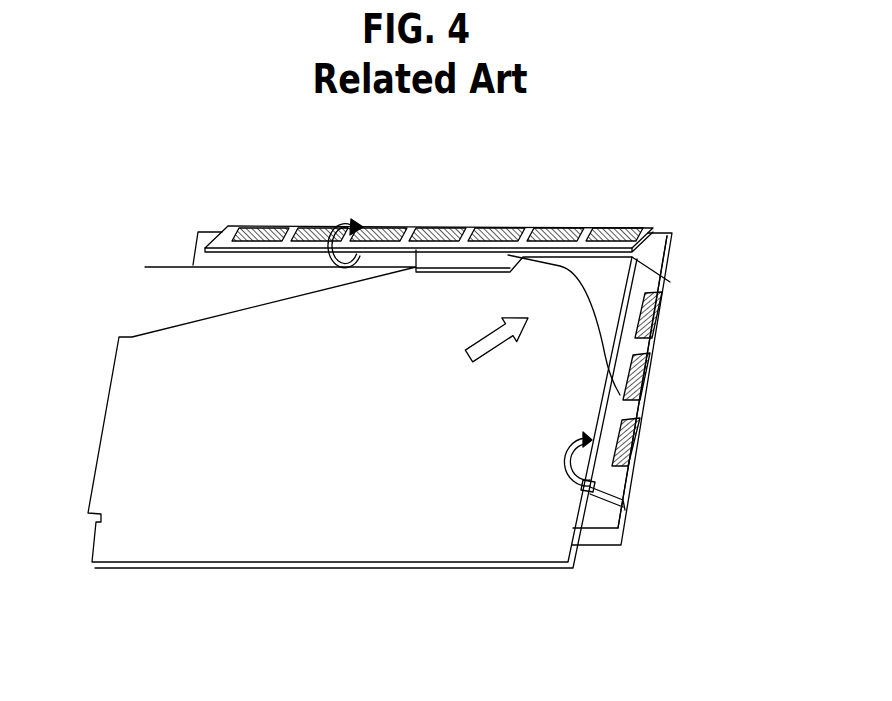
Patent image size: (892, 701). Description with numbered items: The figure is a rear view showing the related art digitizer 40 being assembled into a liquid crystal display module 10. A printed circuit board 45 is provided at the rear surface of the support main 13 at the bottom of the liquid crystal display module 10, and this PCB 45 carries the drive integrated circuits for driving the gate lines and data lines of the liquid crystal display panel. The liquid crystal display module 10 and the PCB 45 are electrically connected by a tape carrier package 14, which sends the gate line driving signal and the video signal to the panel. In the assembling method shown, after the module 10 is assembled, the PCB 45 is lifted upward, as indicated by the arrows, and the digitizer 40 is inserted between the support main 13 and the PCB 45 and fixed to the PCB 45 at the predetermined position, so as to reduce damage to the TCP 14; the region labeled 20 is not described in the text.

The liquid crystal display module 10 is at (530, 228).
The support main 13 is at (663, 246).
The tape carrier package 14 is at (620, 226).
The side mounting portion 20 is at (670, 282).
The digitizer 40 is at (483, 543).
The printed circuit board 45 is at (647, 345).